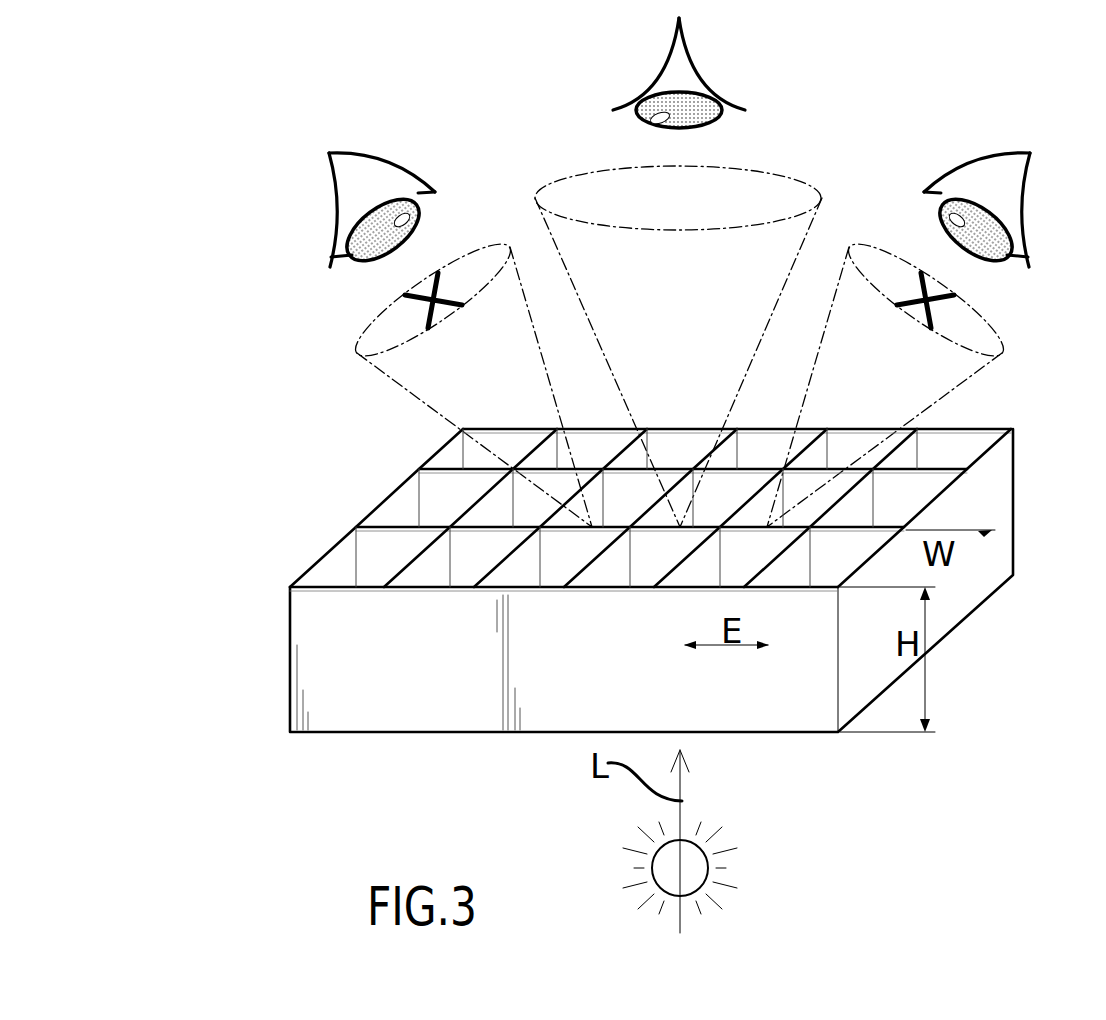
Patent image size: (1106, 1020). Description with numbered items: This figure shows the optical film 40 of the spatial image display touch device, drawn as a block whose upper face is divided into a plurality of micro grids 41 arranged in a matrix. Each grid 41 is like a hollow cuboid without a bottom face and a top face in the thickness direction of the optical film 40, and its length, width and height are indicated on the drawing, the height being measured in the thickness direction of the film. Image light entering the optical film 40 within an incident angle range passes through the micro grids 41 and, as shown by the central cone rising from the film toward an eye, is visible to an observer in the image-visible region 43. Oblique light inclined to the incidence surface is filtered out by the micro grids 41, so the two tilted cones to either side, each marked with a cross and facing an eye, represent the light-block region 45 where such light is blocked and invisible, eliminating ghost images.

The optical film 40 is at (587, 580).
The micro grids 41 is at (412, 517).
The image-visible region 43 is at (758, 190).
The light-block region 45 is at (368, 343).